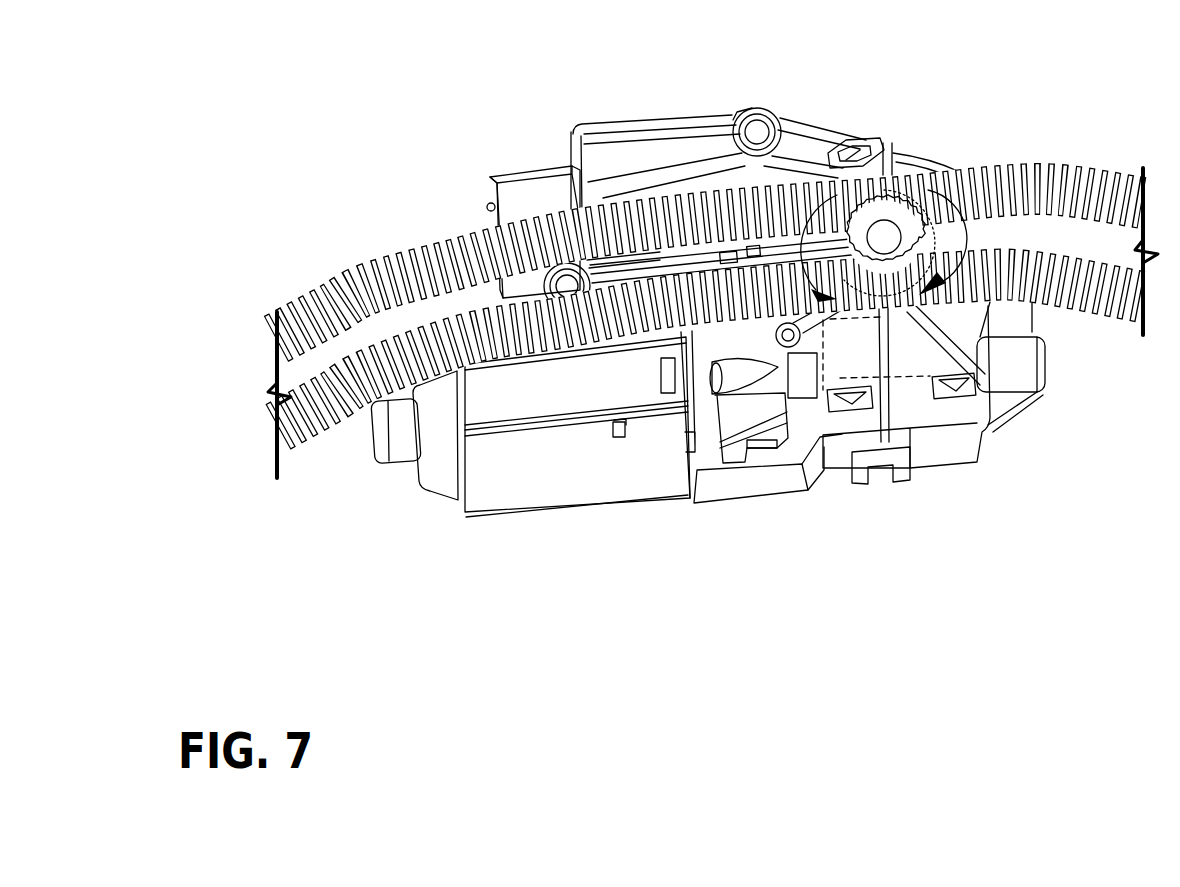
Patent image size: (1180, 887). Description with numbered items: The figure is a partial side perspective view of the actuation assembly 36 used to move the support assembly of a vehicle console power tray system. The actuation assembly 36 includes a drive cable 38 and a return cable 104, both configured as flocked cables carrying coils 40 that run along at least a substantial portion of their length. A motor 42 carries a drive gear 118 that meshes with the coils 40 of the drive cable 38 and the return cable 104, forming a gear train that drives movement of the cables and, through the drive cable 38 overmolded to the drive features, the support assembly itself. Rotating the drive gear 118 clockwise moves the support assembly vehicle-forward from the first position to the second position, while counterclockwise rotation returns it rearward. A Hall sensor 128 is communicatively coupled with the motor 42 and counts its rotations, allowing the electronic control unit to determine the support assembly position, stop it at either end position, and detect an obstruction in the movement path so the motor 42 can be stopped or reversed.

The actuation assembly 36 is at (716, 98).
The drive cable 38 is at (321, 422).
The coils 40 is at (535, 205).
The motor 42 is at (812, 148).
The return cable 104 is at (371, 273).
The drive gear 118 is at (890, 215).
The Hall sensor 128 is at (903, 382).